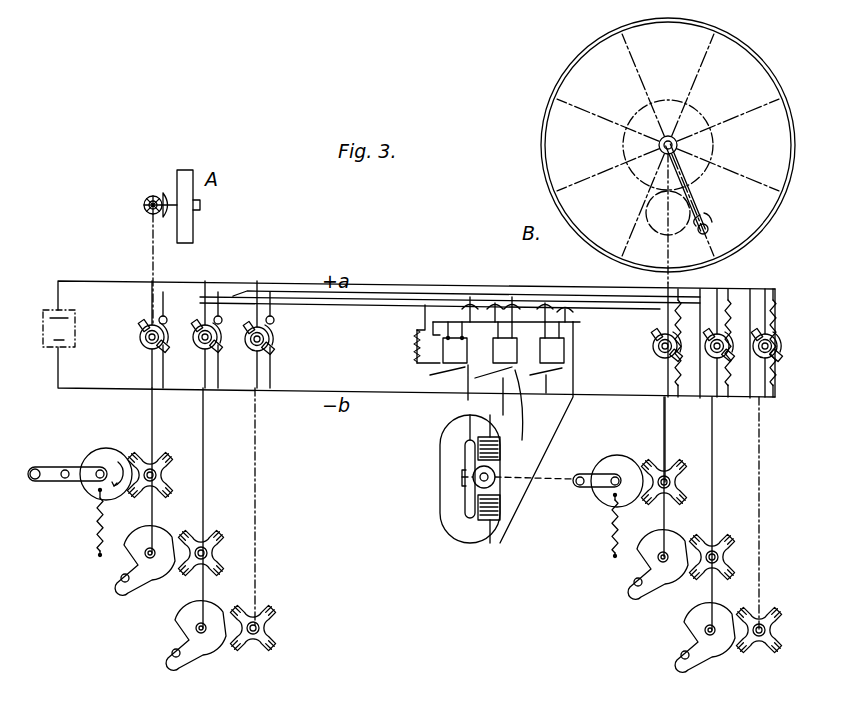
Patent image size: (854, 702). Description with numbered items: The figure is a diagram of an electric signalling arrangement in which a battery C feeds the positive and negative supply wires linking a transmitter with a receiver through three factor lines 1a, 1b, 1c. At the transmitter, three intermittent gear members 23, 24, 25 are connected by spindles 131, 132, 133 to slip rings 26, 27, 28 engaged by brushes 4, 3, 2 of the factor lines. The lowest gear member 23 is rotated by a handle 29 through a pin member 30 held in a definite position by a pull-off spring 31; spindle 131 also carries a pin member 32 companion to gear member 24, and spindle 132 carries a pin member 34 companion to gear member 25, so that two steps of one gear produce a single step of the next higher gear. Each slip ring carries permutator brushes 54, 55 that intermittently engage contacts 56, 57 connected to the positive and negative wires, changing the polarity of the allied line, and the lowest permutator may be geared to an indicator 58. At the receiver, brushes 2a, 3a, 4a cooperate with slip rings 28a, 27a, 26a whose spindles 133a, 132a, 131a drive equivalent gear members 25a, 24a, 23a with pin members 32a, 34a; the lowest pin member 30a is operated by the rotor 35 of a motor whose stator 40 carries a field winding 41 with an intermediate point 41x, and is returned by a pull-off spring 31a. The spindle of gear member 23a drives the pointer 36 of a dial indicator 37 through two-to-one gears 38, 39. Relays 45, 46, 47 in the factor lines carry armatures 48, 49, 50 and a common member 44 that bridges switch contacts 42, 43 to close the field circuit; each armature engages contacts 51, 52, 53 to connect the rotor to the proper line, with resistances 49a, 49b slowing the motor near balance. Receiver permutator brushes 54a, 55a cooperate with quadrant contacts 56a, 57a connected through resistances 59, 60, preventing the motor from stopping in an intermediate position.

The battery C is at (59, 328).
The indicator 58 is at (200, 215).
The slip ring 26 is at (140, 338).
The slip ring 27 is at (203, 352).
The slip ring 28 is at (257, 353).
The brush 4 is at (140, 325).
The contact 56 is at (156, 314).
The brush 3 is at (200, 322).
The brush 2 is at (250, 328).
The permutator brush 54 is at (141, 330).
The permutator brush 55 is at (160, 352).
The contact 57 is at (166, 368).
The factor line 1a is at (332, 300).
The factor line 1b is at (340, 306).
The factor line 1c is at (346, 312).
The resistance 49b is at (414, 345).
The switch contact 43 is at (433, 326).
The relay 47 is at (450, 361).
The relay 46 is at (499, 381).
The relay 45 is at (548, 357).
The common member 44 is at (470, 320).
The contact 52 is at (510, 338).
The contact 53 is at (430, 378).
The contact 51 is at (462, 372).
The armature 50 is at (468, 378).
The resistance 49a is at (476, 380).
The armature 49 is at (512, 372).
The switch contact 42 is at (574, 324).
The armature 48 is at (565, 370).
The motor stator 40 is at (450, 528).
The field winding 41 is at (466, 442).
The intermediate point 41x is at (462, 478).
The motor rotor 35 is at (496, 470).
The dial indicator 37 is at (545, 135).
The gear 39 is at (705, 118).
The gear 38 is at (652, 210).
The pointer 36 is at (708, 222).
The quadrant contact 56a is at (665, 310).
The resistance 59 is at (710, 305).
The slip ring 26a is at (656, 352).
The slip ring 27a is at (716, 360).
The slip ring 28a is at (765, 360).
The brush 4a is at (655, 332).
The brush 3a is at (710, 332).
The brush 2a is at (760, 332).
The permutator slip ring brush 54a is at (652, 340).
The permutator slip ring brush 55a is at (668, 366).
The quadrant contact 57a is at (672, 395).
The resistance 60 is at (752, 385).
The spindle 131 is at (152, 416).
The spindle 132 is at (203, 424).
The spindle 133 is at (255, 430).
The gear member 23 is at (172, 472).
The gear member 24 is at (222, 548).
The gear member 25 is at (280, 622).
The handle 29 is at (56, 460).
The pin member 30 is at (64, 480).
The pull-off spring 31 is at (97, 525).
The pin member 32 is at (122, 565).
The pin member 34 is at (178, 638).
The spindle 131a is at (664, 436).
The spindle 132a is at (712, 426).
The spindle 133a is at (759, 442).
The gear member 23a is at (690, 476).
The gear member 24a is at (722, 535).
The gear member 25a is at (758, 650).
The pin member 30a is at (580, 486).
The pull-off spring 31a is at (611, 528).
The pin member 32a is at (634, 570).
The pin member 34a is at (688, 636).